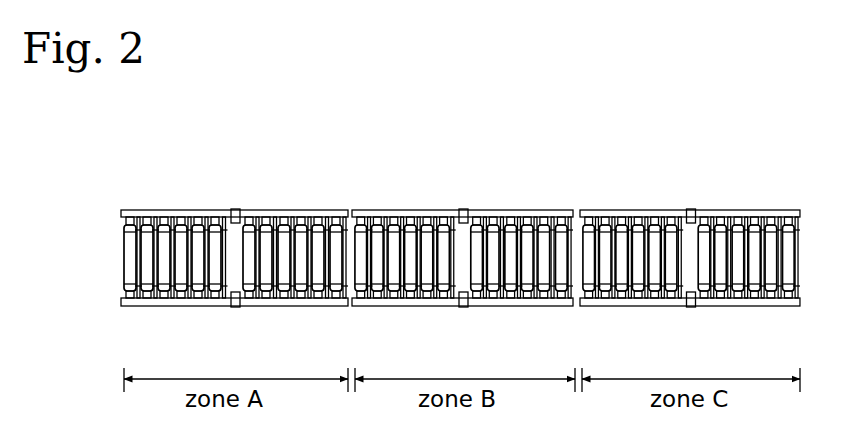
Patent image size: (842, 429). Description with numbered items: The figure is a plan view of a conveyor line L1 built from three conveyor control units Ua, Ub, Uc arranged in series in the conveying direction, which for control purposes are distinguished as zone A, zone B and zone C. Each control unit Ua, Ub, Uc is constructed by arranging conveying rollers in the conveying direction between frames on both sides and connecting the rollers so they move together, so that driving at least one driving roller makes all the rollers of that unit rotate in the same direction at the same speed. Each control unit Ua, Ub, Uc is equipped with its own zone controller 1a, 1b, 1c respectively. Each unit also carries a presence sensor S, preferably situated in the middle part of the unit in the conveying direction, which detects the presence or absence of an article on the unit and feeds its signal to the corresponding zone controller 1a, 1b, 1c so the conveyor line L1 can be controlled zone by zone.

The conveyor line L1 is at (737, 134).
The zone controller 1a is at (282, 203).
The zone controller 1b is at (505, 200).
The zone controller 1c is at (720, 200).
The control unit Ua is at (198, 203).
The control unit Ub is at (432, 200).
The control unit Uc is at (651, 197).
The presence sensor S is at (237, 205).